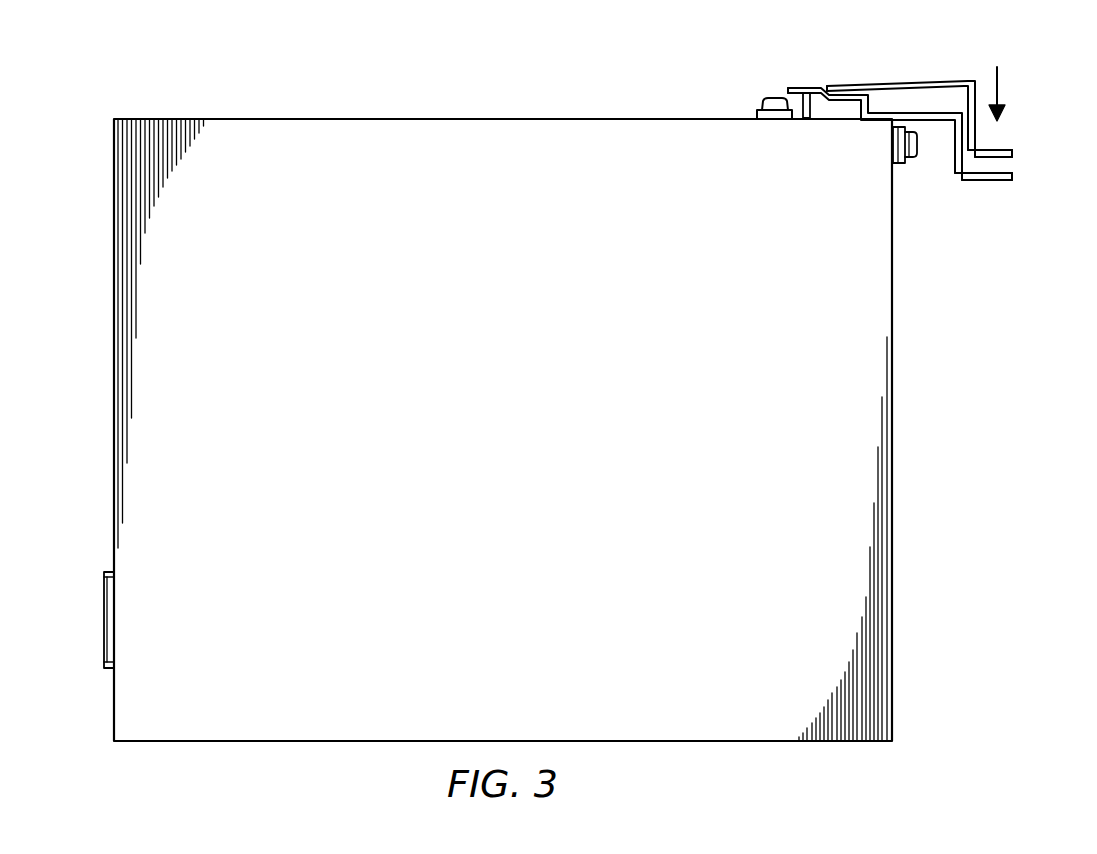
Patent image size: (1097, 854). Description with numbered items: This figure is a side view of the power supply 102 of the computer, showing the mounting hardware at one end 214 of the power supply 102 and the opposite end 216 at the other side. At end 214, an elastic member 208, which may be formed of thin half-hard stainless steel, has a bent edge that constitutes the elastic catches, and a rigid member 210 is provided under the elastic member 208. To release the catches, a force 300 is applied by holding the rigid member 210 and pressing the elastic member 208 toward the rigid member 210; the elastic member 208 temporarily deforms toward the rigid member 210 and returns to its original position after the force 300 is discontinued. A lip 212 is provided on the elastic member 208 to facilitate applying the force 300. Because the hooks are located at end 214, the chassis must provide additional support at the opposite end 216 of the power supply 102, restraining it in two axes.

The power supply 102 is at (522, 446).
The elastic member 208 is at (915, 82).
The rigid member 210 is at (987, 183).
The lip 212 is at (1000, 148).
The end of power supply 214 is at (893, 703).
The opposite end of power supply 216 is at (113, 704).
The force 300 is at (1000, 87).